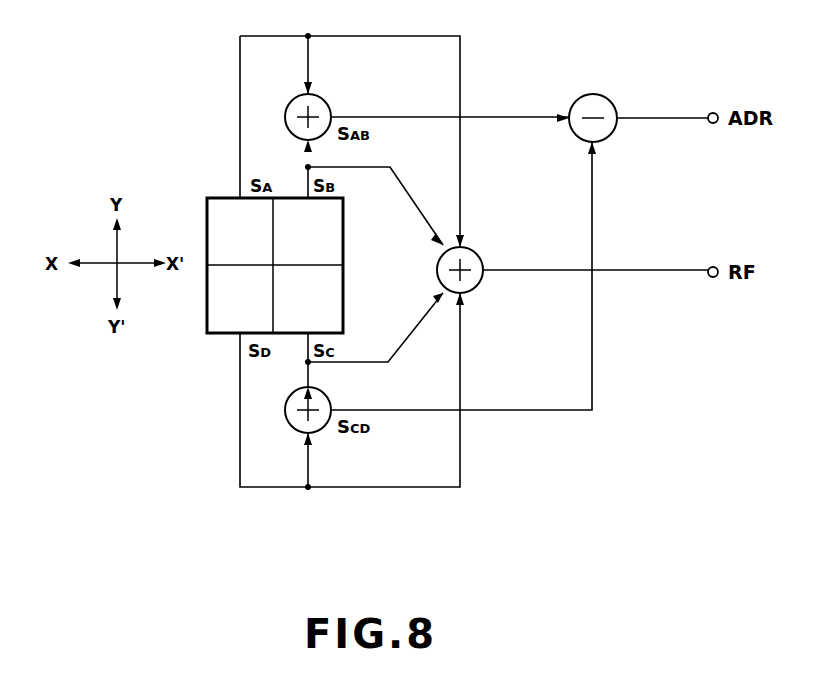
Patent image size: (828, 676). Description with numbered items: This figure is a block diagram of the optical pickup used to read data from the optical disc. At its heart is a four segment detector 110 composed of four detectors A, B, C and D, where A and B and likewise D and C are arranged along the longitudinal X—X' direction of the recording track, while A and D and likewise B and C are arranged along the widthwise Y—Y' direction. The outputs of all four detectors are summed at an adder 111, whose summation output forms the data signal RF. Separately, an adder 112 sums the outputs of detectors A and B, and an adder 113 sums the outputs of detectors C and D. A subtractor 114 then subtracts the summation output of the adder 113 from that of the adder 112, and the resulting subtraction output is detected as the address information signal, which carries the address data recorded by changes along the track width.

The four segment detector 110 is at (200, 188).
The adder 111 is at (479, 287).
The adder 112 is at (326, 101).
The adder 113 is at (330, 401).
The subtractor 114 is at (590, 94).